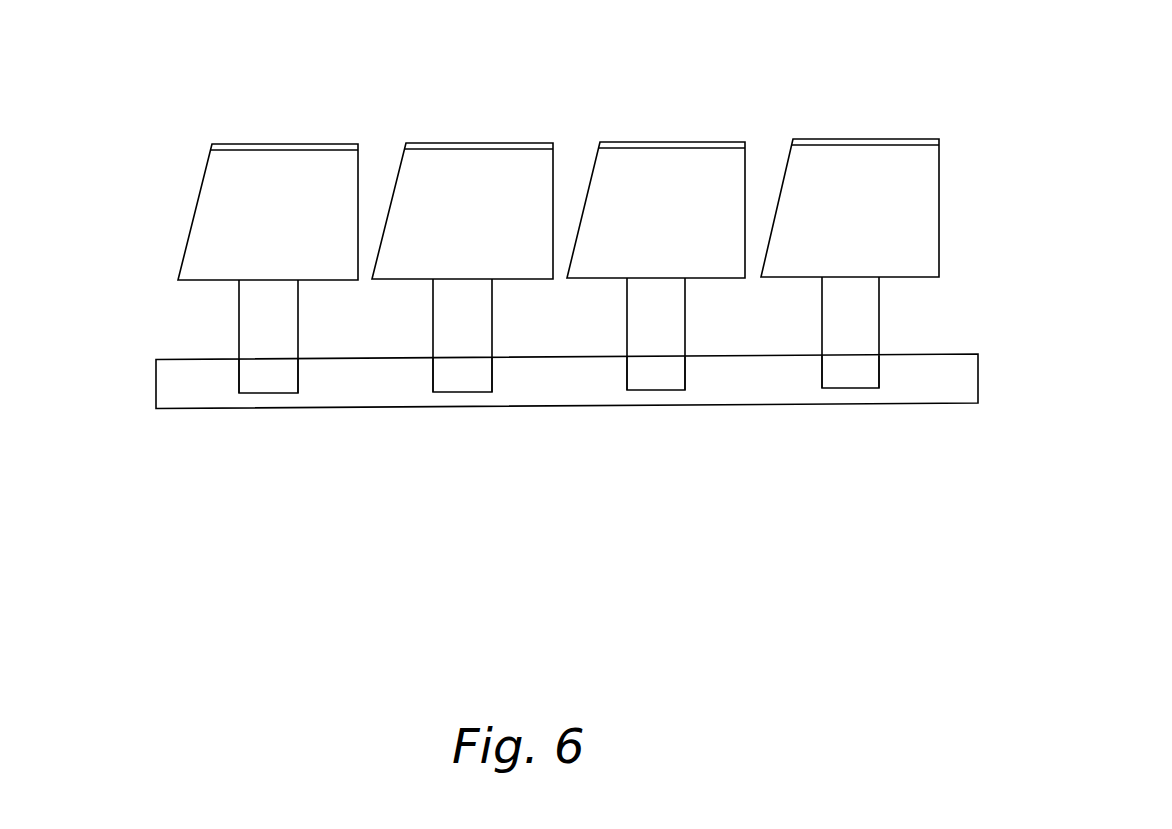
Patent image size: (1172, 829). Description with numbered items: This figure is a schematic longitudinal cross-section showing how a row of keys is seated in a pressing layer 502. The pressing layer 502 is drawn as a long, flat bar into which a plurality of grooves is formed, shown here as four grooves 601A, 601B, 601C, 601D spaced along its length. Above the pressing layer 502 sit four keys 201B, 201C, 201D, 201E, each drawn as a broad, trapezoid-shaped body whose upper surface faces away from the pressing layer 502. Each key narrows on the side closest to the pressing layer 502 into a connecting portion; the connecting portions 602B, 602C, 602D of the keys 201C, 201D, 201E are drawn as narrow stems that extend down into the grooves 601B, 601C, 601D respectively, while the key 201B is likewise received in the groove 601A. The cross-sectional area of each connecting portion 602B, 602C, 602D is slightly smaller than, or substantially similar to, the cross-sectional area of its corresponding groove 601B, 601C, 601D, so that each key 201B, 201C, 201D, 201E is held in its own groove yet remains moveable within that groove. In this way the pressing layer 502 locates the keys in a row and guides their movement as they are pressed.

The key 201B is at (278, 160).
The key 201C is at (478, 158).
The key 201D is at (672, 155).
The key 201E is at (865, 155).
The pressing layer 502 is at (967, 378).
The groove 601A is at (250, 341).
The groove 601B is at (483, 380).
The groove 601C is at (675, 378).
The groove 601D is at (869, 377).
The connecting portion 602B is at (446, 338).
The connecting portion 602C is at (638, 338).
The connecting portion 602D is at (831, 337).